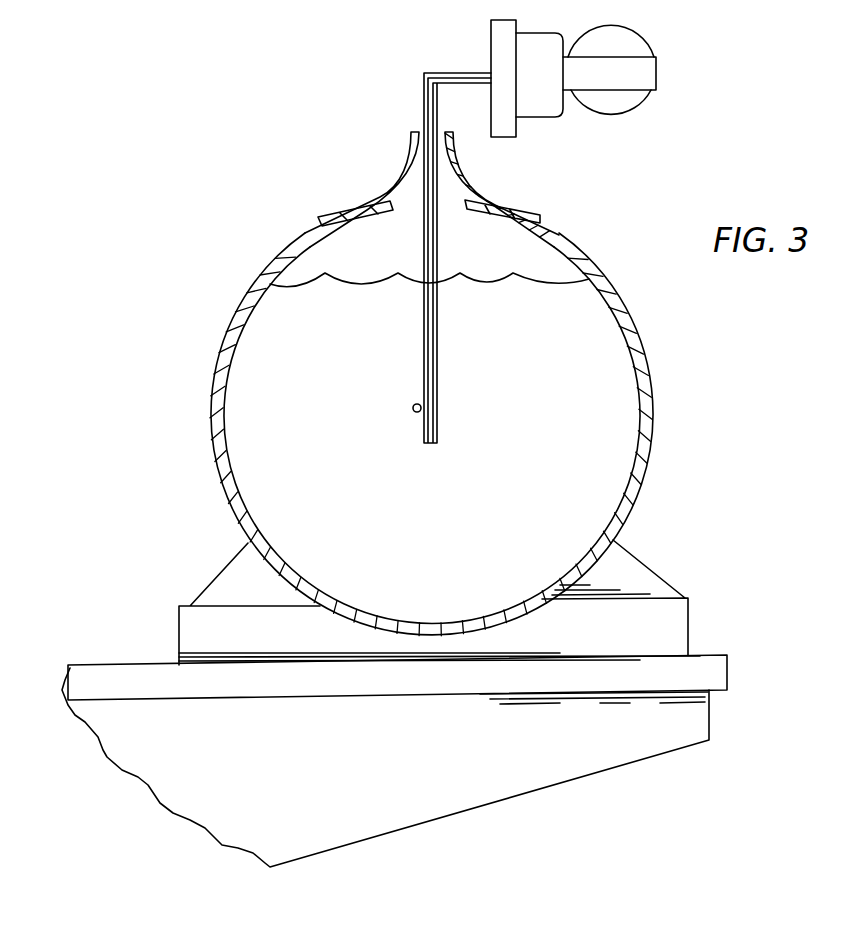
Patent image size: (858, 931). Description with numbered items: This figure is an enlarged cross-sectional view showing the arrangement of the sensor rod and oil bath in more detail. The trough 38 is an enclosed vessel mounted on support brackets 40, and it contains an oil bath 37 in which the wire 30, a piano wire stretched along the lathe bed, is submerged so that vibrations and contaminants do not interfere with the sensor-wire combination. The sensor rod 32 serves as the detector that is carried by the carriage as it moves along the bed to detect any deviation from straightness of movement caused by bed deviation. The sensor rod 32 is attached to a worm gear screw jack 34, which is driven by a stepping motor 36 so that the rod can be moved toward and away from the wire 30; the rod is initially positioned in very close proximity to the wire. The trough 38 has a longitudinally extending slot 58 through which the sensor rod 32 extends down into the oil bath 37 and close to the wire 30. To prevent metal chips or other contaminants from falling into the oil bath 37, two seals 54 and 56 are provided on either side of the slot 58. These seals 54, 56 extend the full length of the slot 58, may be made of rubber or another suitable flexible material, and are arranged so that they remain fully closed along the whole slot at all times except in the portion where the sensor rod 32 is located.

The wire 30 is at (415, 404).
The sensor rod 32 is at (440, 333).
The worm gear screw jack 34 is at (491, 40).
The stepping motor 36 is at (610, 115).
The oil bath 37 is at (620, 405).
The trough 38 is at (222, 348).
The support brackets 40 is at (524, 794).
The seal 54 is at (455, 165).
The seal 56 is at (403, 164).
The slot 58 is at (448, 225).